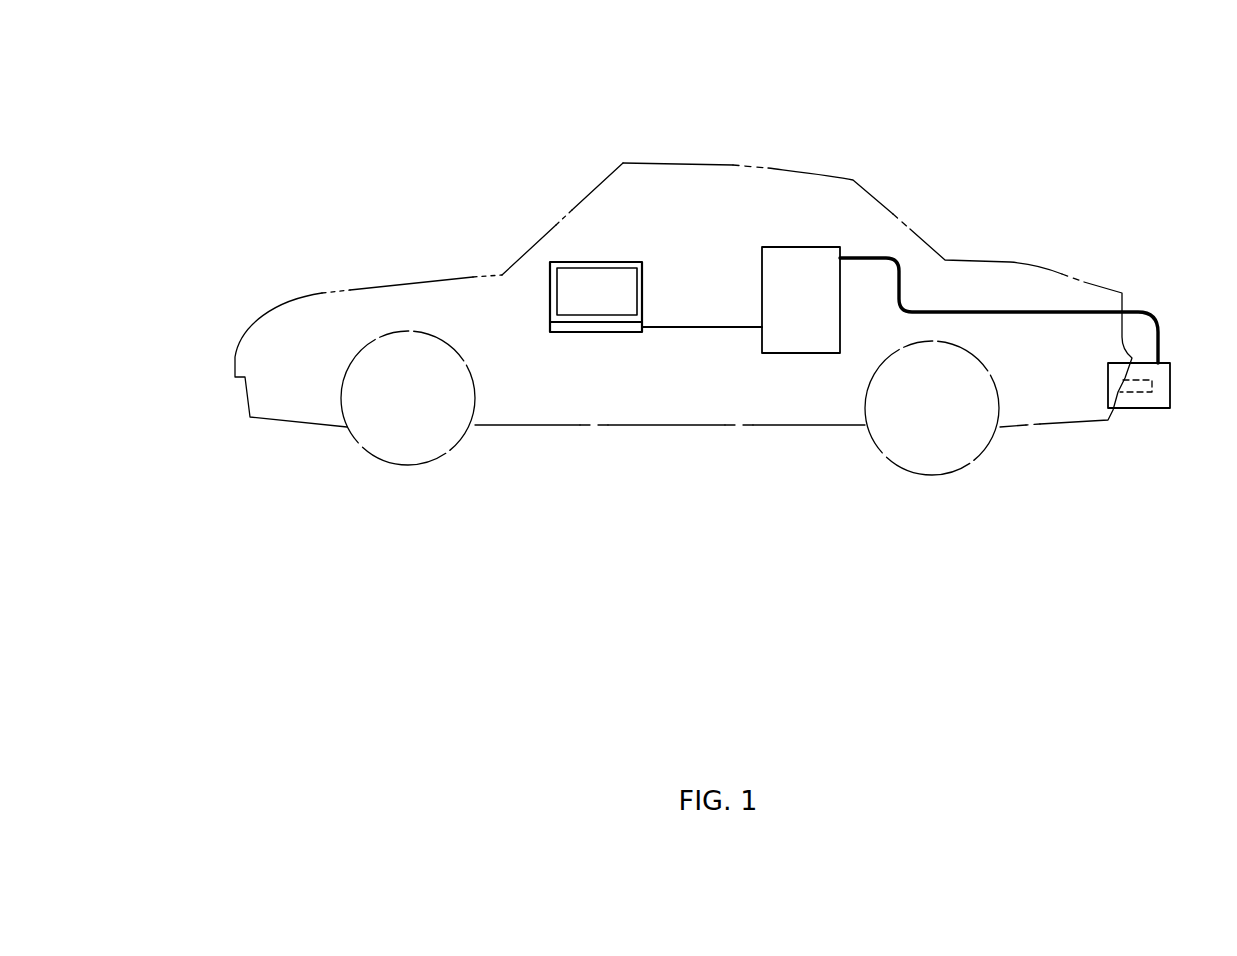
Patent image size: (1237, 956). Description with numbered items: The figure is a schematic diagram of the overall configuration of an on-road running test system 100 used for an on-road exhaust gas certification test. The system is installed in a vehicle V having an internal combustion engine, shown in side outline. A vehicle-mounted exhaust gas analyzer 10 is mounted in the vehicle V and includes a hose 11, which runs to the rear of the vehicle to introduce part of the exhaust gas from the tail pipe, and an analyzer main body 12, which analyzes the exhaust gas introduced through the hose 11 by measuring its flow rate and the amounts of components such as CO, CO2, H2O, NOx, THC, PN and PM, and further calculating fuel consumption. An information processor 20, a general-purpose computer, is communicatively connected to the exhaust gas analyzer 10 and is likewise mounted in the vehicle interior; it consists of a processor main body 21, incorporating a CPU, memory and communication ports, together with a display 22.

The on-road running test system 100 is at (943, 152).
The vehicle V is at (428, 278).
The vehicle-mounted exhaust gas analyzer 10 is at (752, 239).
The hose 11 is at (1027, 312).
The analyzer main body 12 is at (785, 353).
The information processor 20 is at (588, 249).
The processor main body 21 is at (600, 333).
The display 22 is at (548, 270).